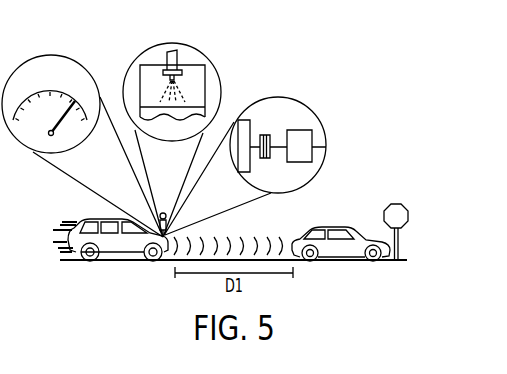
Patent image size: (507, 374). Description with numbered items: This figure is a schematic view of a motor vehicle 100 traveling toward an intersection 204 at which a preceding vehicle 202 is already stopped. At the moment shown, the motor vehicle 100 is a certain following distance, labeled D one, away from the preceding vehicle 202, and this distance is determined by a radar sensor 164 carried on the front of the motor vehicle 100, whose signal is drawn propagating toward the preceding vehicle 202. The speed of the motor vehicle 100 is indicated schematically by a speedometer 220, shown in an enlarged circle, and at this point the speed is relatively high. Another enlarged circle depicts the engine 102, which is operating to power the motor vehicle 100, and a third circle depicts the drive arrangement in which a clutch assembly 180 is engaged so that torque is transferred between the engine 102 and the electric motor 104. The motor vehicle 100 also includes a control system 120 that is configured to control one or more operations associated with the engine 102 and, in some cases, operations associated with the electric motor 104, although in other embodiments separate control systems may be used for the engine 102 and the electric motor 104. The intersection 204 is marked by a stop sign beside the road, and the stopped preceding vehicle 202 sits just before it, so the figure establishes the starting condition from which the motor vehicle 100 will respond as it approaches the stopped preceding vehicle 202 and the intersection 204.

The motor vehicle 100 is at (125, 258).
The engine 102 is at (213, 64).
The electric motor 104 is at (305, 138).
The control system 120 is at (180, 218).
The radar sensor 164 is at (164, 212).
The clutch assembly 180 is at (268, 122).
The preceding vehicle 202 is at (330, 227).
The intersection 204 is at (397, 195).
The speedometer 220 is at (79, 63).